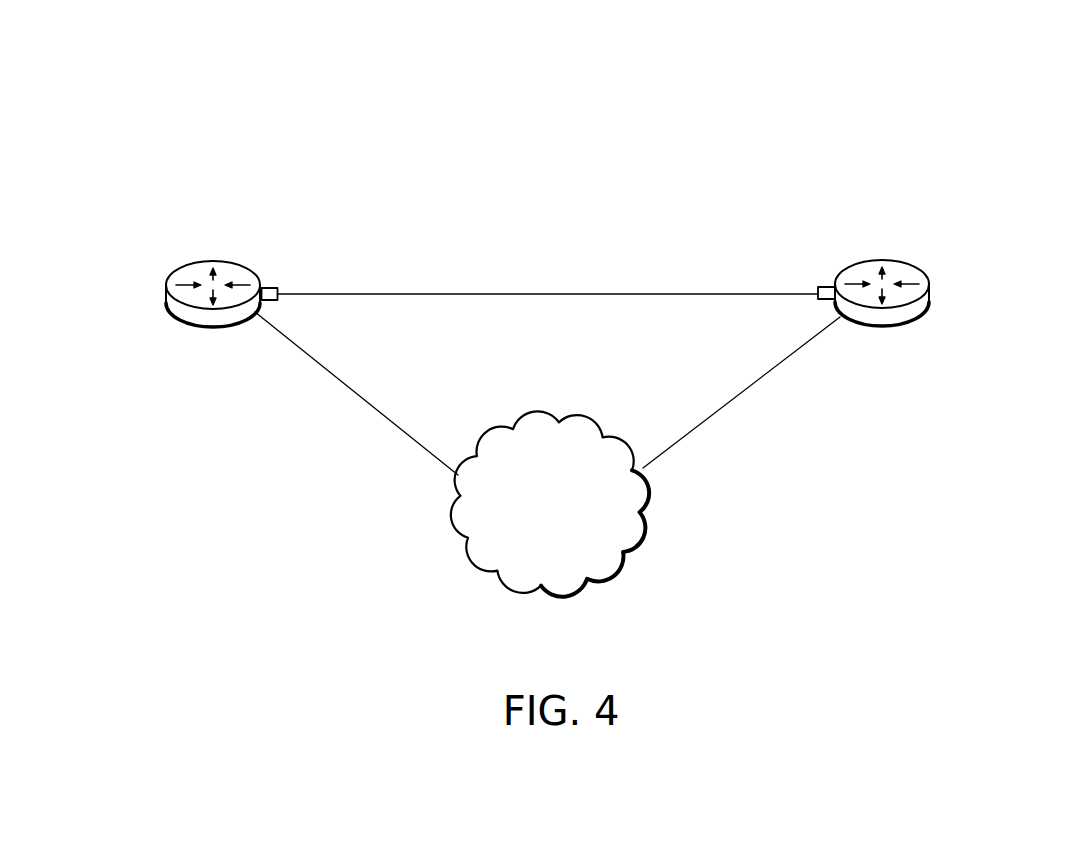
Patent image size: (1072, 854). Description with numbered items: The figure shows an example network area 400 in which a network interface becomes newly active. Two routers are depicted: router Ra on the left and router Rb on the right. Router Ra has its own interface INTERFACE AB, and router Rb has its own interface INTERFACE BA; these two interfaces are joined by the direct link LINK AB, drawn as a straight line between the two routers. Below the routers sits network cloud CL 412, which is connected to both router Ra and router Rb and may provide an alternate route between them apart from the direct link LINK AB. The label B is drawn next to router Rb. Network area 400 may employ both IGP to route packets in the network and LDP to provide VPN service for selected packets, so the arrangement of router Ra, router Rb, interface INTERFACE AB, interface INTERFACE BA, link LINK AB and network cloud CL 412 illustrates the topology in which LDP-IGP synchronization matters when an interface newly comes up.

The network area 400 is at (170, 103).
The router Ra is at (166, 258).
The router Rb is at (931, 266).
The interface AB INTERFACE AB is at (270, 284).
The interface BA INTERFACE BA is at (825, 284).
The link AB LINK AB is at (560, 292).
The node B is at (909, 322).
The network cloud CL 412 is at (535, 529).